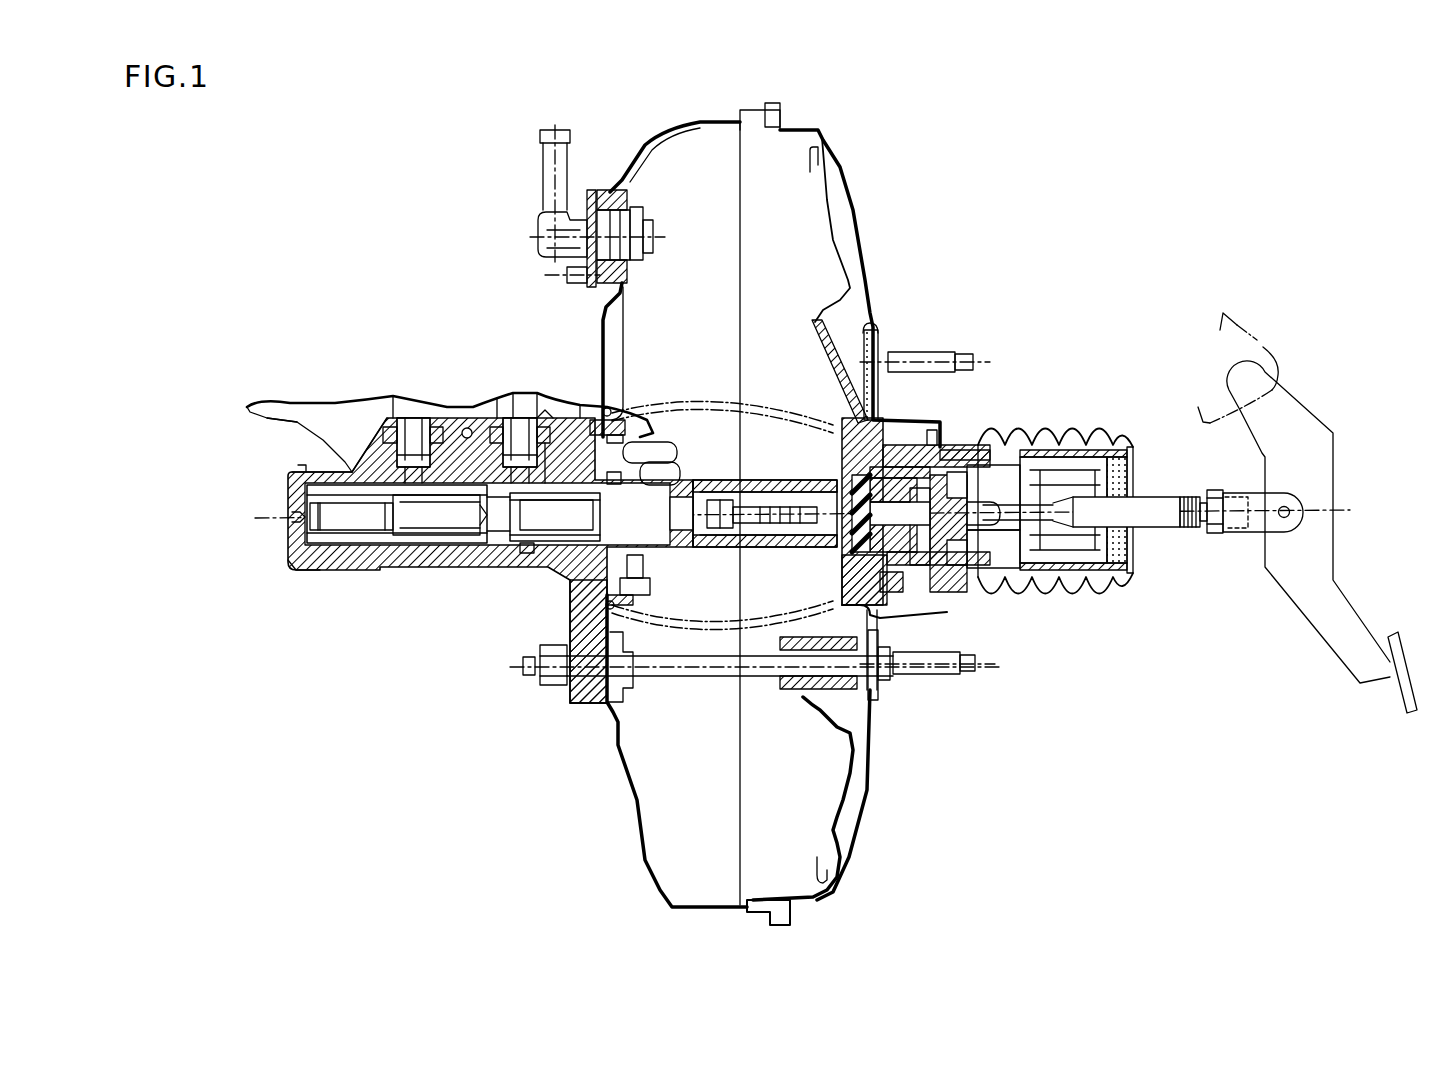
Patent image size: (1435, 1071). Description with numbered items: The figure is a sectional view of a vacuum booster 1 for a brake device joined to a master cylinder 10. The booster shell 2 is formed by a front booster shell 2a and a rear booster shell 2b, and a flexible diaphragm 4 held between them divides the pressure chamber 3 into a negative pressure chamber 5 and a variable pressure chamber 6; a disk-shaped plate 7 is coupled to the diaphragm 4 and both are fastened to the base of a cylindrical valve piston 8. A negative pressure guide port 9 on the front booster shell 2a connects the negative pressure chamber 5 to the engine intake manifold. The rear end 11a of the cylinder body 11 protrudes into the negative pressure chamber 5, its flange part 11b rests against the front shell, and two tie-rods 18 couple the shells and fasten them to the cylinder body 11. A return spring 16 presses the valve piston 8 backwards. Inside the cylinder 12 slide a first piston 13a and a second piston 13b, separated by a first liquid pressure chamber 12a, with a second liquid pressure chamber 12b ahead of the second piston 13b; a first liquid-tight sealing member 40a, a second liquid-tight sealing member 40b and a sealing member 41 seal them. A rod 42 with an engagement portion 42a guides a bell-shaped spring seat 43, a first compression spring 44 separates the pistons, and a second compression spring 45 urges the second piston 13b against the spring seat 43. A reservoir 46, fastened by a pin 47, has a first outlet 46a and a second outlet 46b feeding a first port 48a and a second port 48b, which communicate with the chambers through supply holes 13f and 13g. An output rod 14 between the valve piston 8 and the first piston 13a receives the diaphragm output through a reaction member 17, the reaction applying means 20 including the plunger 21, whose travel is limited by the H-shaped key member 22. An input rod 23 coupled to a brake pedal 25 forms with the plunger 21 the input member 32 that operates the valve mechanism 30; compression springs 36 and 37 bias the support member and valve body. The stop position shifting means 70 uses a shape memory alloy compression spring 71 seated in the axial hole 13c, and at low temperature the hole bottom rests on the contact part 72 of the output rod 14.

The vacuum booster 1 is at (858, 203).
The booster shell 2 is at (690, 120).
The front booster shell 2a is at (637, 833).
The rear booster shell 2b is at (862, 232).
The pressure chamber 3 is at (783, 160).
The flexible diaphragm 4 is at (843, 180).
The negative pressure chamber 5 is at (677, 160).
The variable pressure chamber 6 is at (851, 262).
The disk-shaped plate 7 is at (813, 160).
The valve piston 8 is at (983, 440).
The negative pressure guide port 9 is at (540, 187).
The master cylinder 10 is at (278, 542).
The cylinder body 11 is at (570, 693).
The rear end of cylinder body 11a is at (613, 693).
The flange part 11b is at (610, 703).
The cylinder 12 is at (447, 577).
The first liquid pressure chamber 12a is at (527, 650).
The second liquid pressure chamber 12b is at (290, 563).
The first piston 13a is at (688, 552).
The second piston 13b is at (496, 500).
The axial hole 13c is at (737, 537).
The supply hole 13f is at (614, 470).
The supply hole 13g is at (340, 468).
The output rod 14 is at (820, 600).
The return spring 16 is at (840, 352).
The reaction member 17 is at (897, 677).
The tie-rods 18 is at (703, 672).
The reaction applying means 20 is at (922, 655).
The plunger 21 is at (940, 490).
The key member 22 is at (883, 539).
The input rod 23 is at (1160, 517).
The brake pedal 25 is at (1327, 620).
The valve mechanism 30 is at (1040, 463).
The input member 32 is at (975, 555).
The compression spring 36 is at (1087, 587).
The compression spring 37 is at (1073, 463).
The first liquid-tight sealing member 40a is at (612, 510).
The second liquid-tight sealing member 40b is at (383, 495).
The sealing member 41 is at (380, 573).
The rod 42 is at (575, 455).
The engagement portion 42a is at (530, 415).
The spring seat 43 is at (473, 580).
The first compression spring 44 is at (517, 573).
The second compression spring 45 is at (330, 570).
The reservoir 46 is at (273, 407).
The first outlet 46a is at (509, 430).
The second outlet 46b is at (400, 403).
The pin 47 is at (440, 427).
The first port 48a is at (652, 442).
The second port 48b is at (357, 475).
The stop position shifting means 70 is at (770, 471).
The compression spring 71 is at (740, 423).
The contact part 72 is at (715, 505).